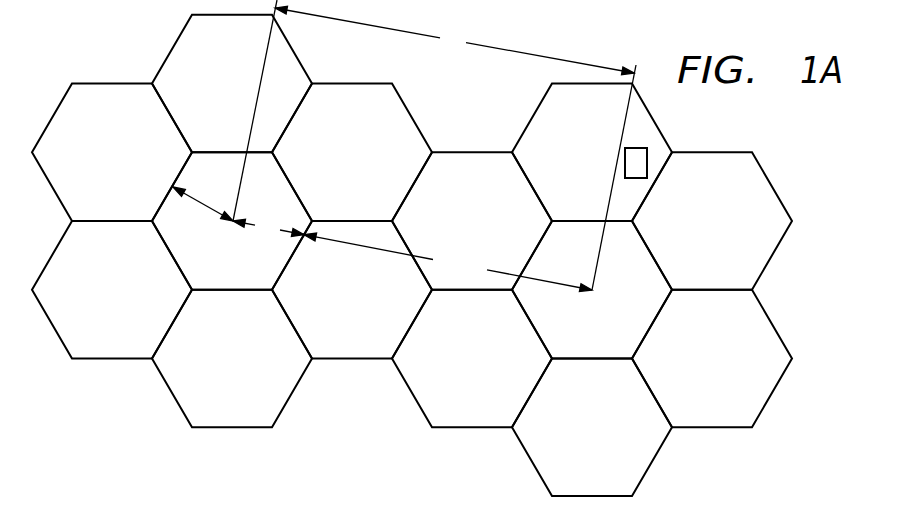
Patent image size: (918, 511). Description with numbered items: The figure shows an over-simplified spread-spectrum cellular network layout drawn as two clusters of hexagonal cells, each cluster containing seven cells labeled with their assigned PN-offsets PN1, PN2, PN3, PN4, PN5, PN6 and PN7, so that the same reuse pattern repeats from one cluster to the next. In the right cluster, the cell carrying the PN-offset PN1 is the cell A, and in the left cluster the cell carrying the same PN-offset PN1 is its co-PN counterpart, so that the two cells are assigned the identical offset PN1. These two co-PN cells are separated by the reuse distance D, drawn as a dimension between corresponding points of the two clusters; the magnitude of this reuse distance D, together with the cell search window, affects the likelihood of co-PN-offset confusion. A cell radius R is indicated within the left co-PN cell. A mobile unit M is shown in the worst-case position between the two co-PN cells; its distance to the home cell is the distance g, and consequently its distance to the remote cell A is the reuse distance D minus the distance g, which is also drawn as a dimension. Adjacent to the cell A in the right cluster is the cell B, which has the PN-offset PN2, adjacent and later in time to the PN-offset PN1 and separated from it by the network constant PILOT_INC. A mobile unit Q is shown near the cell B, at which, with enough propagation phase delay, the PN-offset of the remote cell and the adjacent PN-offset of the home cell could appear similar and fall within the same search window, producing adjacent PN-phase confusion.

The PN-offset PN1 is at (412, 255).
The PN-offset PN2 is at (412, 118).
The cell assigned PN offset 3 PN3 is at (292, 187).
The cell assigned PN offset 4 PN4 is at (292, 324).
The cell assigned PN offset 5 PN5 is at (412, 393).
The cell assigned PN offset 6 PN6 is at (532, 324).
The cell assigned PN offset 7 PN7 is at (532, 187).
The Cell A is at (409, 300).
The Cell B is at (553, 153).
The reuse distance D is at (434, 146).
The distance of mobile unit to home cell g is at (268, 226).
The cell radius R is at (203, 200).
The mobile unit M is at (307, 239).
The mobile unit Q is at (647, 156).